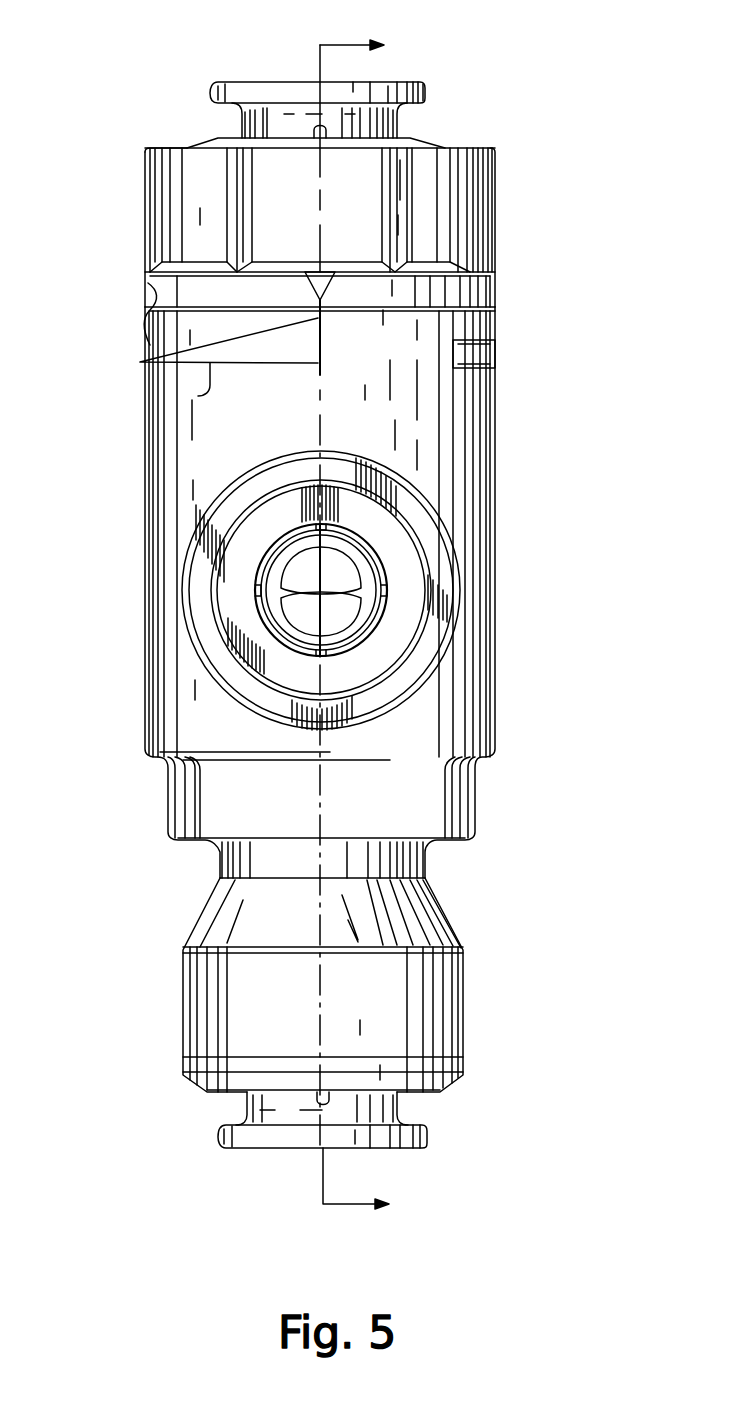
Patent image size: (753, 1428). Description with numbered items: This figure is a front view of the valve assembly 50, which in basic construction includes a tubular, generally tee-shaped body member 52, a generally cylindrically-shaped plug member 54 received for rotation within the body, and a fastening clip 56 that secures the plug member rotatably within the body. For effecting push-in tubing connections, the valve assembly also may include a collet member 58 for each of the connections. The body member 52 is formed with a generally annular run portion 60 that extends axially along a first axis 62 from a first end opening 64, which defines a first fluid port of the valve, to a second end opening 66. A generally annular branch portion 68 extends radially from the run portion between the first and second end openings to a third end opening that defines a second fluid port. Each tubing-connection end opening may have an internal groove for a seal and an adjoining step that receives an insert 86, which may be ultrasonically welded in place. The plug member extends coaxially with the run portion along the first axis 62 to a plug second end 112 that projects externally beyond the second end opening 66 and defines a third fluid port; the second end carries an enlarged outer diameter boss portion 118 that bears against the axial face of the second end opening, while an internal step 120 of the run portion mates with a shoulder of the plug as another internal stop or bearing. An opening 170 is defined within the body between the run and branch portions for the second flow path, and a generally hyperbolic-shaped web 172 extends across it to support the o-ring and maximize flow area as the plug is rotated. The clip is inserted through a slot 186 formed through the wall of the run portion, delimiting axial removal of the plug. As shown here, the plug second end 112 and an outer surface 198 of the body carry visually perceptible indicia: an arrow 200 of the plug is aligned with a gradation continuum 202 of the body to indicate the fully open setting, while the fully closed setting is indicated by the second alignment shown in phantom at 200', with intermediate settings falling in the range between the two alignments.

The valve assembly 50 is at (587, 51).
The body member 52 is at (495, 408).
The plug member 54 is at (495, 144).
The fastening clip 56 is at (478, 358).
The collet member 58 is at (425, 82).
The run portion 60 is at (146, 510).
The first axis 62 is at (320, 412).
The first end opening 64 is at (463, 1052).
The second end opening 66 is at (495, 301).
The branch portion 68 is at (460, 617).
The insert 86 is at (432, 138).
The plug second end 112 is at (172, 148).
The boss portion 118 is at (140, 283).
The internal step 120 is at (495, 210).
The opening 170 is at (333, 568).
The web 172 is at (333, 598).
The slot 186 is at (472, 342).
The outer surface 198 is at (168, 688).
The arrow 200 is at (185, 261).
The arrow (second alignment) 200' is at (185, 327).
The gradation continuum 202 is at (198, 396).